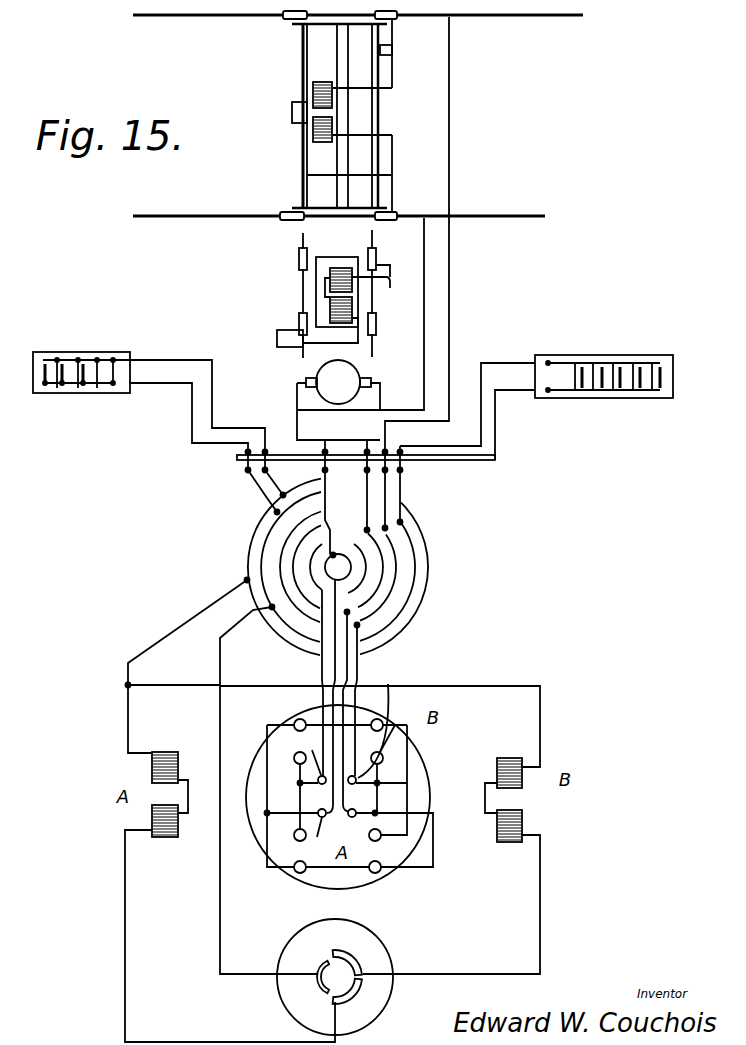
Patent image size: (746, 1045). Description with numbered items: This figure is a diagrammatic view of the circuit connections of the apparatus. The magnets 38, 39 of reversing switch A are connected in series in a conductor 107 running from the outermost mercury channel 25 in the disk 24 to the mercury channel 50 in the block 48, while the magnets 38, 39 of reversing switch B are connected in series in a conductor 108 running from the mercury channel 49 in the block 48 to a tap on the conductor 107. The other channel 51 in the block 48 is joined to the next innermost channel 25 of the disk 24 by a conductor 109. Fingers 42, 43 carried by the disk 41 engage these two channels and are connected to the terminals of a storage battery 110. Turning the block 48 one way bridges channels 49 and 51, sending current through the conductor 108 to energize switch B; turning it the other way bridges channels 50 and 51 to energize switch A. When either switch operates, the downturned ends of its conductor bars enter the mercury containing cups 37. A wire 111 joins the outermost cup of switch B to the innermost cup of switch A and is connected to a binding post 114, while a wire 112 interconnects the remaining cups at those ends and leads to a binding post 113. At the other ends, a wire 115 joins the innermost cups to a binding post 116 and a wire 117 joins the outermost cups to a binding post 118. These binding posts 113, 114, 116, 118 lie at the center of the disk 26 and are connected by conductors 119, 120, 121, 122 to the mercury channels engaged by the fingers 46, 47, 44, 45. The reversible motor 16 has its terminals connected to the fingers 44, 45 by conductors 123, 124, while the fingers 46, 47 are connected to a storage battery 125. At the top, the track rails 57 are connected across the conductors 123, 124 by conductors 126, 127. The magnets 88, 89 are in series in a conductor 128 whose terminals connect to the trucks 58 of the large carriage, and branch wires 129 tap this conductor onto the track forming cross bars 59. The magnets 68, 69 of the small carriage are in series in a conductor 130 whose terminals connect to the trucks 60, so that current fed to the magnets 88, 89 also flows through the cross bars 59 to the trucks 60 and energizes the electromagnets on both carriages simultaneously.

The motor 16 is at (333, 377).
The disk 24 is at (428, 567).
The mercury channel 25 is at (392, 548).
The disk 26 is at (415, 793).
The mercury containing cup 37 is at (383, 722).
The magnet 38 is at (168, 752).
The magnet 39 is at (165, 840).
The disk 41 is at (460, 458).
The finger 42 is at (247, 463).
The finger 43 is at (268, 451).
The finger 44 is at (331, 450).
The finger 45 is at (364, 470).
The finger 46 is at (386, 450).
The finger 47 is at (402, 473).
The block 48 is at (382, 967).
The mercury channel 49 is at (350, 955).
The mercury channel 50 is at (353, 998).
The mercury channel 51 is at (320, 990).
The track rail 57 is at (536, 21).
The truck 58 is at (290, 25).
The track forming cross bar 59 is at (303, 48).
The truck 60 is at (287, 258).
The magnet 68 is at (330, 282).
The magnet 69 is at (330, 303).
The magnet 88 is at (327, 82).
The magnet 89 is at (313, 137).
The conductor 107 is at (225, 596).
The conductor 108 is at (540, 686).
The conductor 109 is at (222, 923).
The storage battery 110 is at (109, 358).
The wire 111 is at (415, 767).
The wire 112 is at (437, 828).
The binding post 113 is at (358, 799).
The binding post 114 is at (384, 698).
The wire 115 is at (338, 788).
The binding post 116 is at (303, 780).
The wire 117 is at (266, 757).
The binding post 118 is at (336, 833).
The conductor 119 is at (413, 603).
The conductor 120 is at (358, 632).
The conductor 121 is at (322, 667).
The conductor 122 is at (333, 673).
The conductor 123 is at (297, 400).
The conductor 124 is at (386, 393).
The storage battery 125 is at (598, 366).
The conductor 126 is at (425, 292).
The conductor 127 is at (449, 318).
The conductor 128 is at (383, 133).
The branch wire 129 is at (383, 50).
The conductor 130 is at (377, 296).